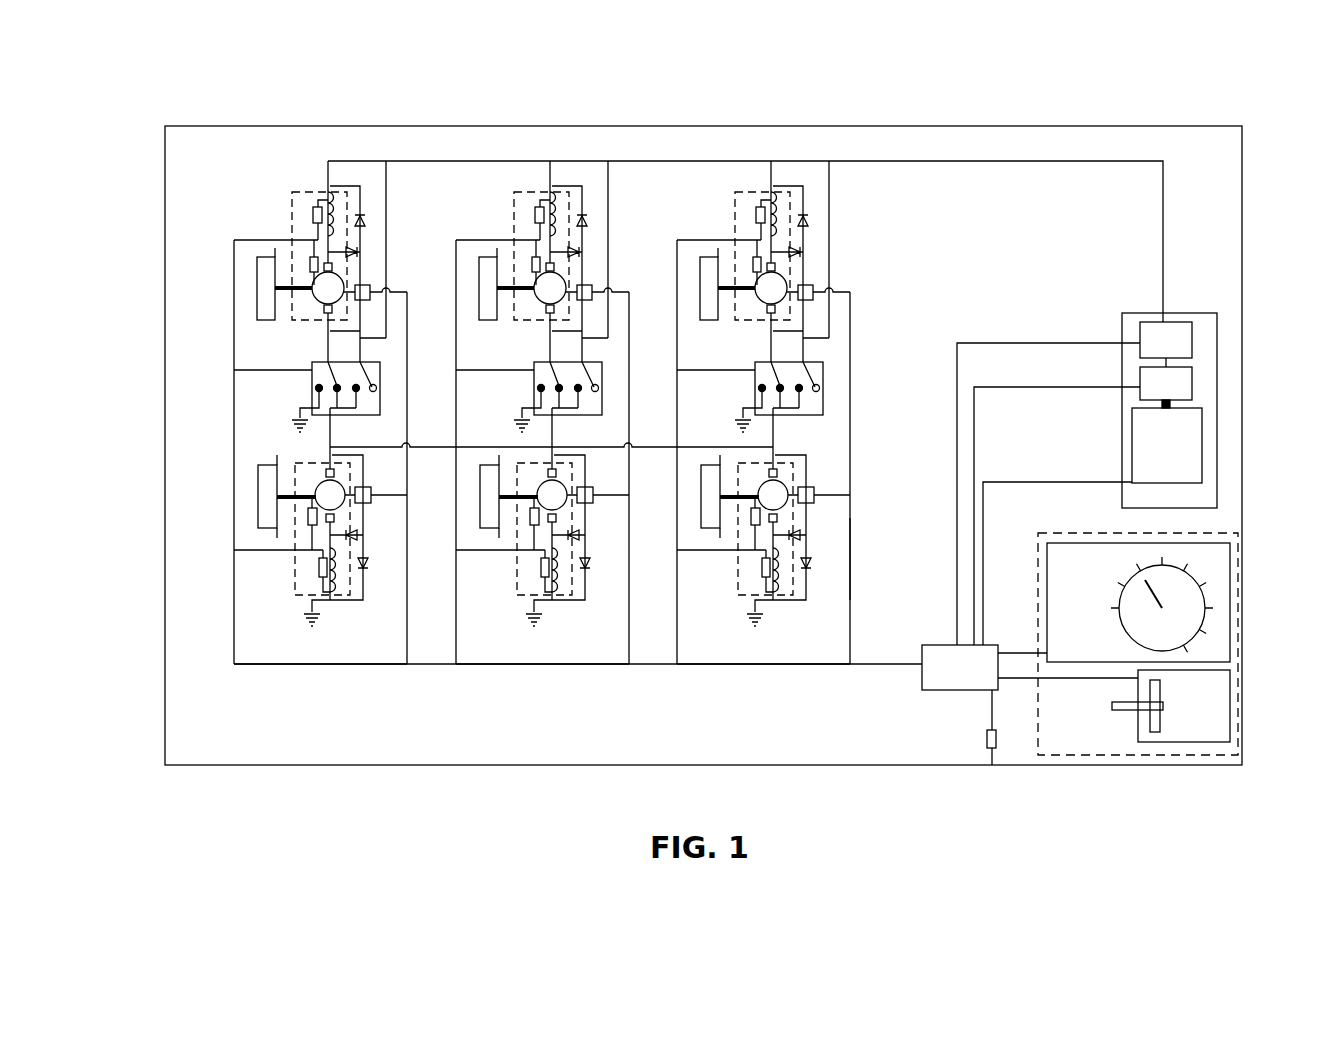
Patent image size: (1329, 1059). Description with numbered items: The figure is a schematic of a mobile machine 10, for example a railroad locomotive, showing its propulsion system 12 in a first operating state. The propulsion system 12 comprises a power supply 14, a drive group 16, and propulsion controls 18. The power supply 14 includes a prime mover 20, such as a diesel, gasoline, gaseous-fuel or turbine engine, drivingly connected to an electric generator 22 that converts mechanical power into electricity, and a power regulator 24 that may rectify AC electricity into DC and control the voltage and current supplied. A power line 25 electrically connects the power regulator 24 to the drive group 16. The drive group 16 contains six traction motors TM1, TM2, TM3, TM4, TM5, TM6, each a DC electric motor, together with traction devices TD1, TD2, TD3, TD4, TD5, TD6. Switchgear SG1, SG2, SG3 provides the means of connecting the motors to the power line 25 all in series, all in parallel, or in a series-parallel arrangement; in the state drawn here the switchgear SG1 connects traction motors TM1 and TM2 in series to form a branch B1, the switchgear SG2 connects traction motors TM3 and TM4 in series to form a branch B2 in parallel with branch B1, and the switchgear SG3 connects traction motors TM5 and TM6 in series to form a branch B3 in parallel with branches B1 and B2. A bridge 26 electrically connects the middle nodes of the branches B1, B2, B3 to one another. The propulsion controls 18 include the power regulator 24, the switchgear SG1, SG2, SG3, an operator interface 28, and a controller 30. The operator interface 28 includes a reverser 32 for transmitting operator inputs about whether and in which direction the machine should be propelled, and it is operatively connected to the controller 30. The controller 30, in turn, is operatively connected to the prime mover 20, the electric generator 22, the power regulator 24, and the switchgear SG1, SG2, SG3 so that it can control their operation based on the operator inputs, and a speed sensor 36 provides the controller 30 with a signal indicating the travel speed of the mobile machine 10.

The mobile machine 10 is at (690, 86).
The propulsion system 12 is at (600, 136).
The power supply 14 is at (1198, 396).
The drive group 16 is at (211, 369).
The propulsion controls 18 is at (829, 528).
The prime mover 20 is at (1167, 445).
The electric generator 22 is at (1166, 383).
The power regulator 24 is at (1166, 340).
The power line 25 is at (930, 161).
The bridge 26 is at (432, 448).
The operator interface 28 is at (1238, 633).
The controller 30 is at (1030, 667).
The reverser 32 is at (1047, 575).
The speed sensor 36 is at (992, 765).
The traction motor TM1 is at (309, 192).
The traction motor TM2 is at (295, 588).
The traction motor TM3 is at (531, 192).
The traction motor TM4 is at (530, 598).
The traction motor TM5 is at (750, 186).
The traction motor TM6 is at (742, 598).
The traction device TD1 is at (268, 255).
The traction device TD2 is at (270, 466).
The traction device TD3 is at (490, 259).
The traction device TD4 is at (493, 465).
The traction device TD5 is at (708, 260).
The traction device TD6 is at (713, 470).
The switchgear SG1 is at (312, 362).
The switchgear SG2 is at (535, 362).
The switchgear SG3 is at (755, 362).
The branch B1 is at (330, 646).
The branch B2 is at (575, 623).
The branch B3 is at (783, 616).